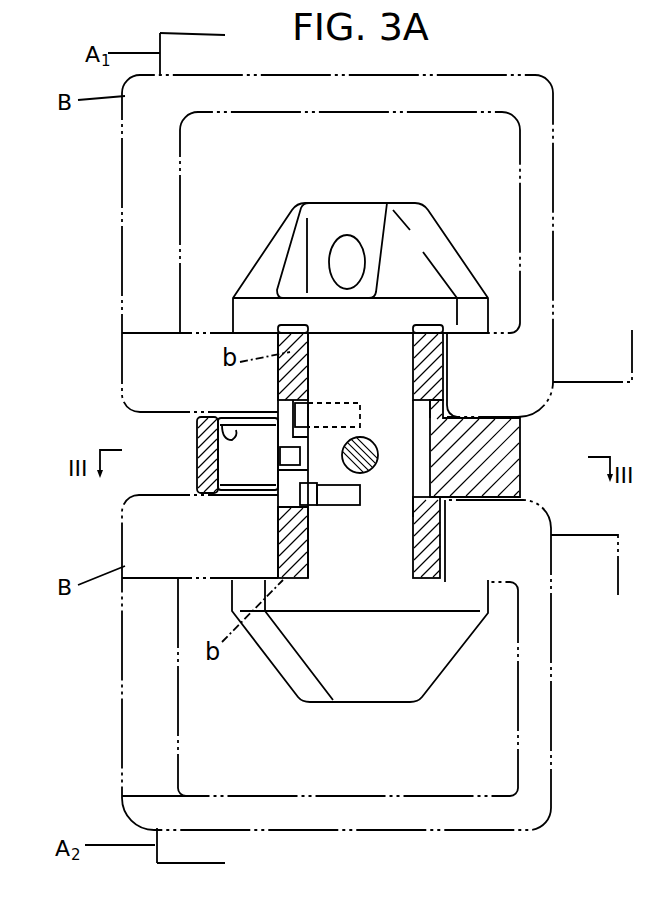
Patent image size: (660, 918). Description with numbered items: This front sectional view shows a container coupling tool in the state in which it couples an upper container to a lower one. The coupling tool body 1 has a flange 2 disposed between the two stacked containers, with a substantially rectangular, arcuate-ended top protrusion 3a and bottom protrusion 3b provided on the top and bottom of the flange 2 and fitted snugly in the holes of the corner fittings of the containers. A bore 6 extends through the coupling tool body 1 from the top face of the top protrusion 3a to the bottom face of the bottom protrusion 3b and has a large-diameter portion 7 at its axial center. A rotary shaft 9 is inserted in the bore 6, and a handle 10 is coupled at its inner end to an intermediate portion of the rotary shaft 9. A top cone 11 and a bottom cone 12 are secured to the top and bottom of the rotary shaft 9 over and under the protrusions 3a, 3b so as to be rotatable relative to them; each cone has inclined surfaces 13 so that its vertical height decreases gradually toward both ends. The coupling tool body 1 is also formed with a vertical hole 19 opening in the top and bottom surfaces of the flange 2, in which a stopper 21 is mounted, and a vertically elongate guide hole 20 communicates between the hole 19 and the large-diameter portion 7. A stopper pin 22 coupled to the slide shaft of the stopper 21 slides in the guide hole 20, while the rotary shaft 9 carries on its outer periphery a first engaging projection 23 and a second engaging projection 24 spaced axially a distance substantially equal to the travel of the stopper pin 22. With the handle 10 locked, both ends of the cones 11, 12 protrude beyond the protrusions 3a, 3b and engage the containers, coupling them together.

The coupling tool body 1 is at (186, 478).
The flange 2 is at (197, 432).
The top protrusion 3a is at (285, 332).
The bottom protrusion 3b is at (278, 548).
The bore 6 is at (412, 540).
The large-diameter portion 7 is at (445, 413).
The rotary shaft 9 is at (400, 372).
The handle 10 is at (376, 450).
The top cone 11 is at (367, 203).
The bottom cone 12 is at (373, 697).
The inclined surfaces 13 is at (440, 227).
The hole 19 is at (225, 425).
The guide hole 20 is at (277, 505).
The stopper 21 is at (232, 420).
The stopper pin 22 is at (278, 452).
The first engaging projection 23 is at (302, 417).
The second engaging projection 24 is at (310, 500).